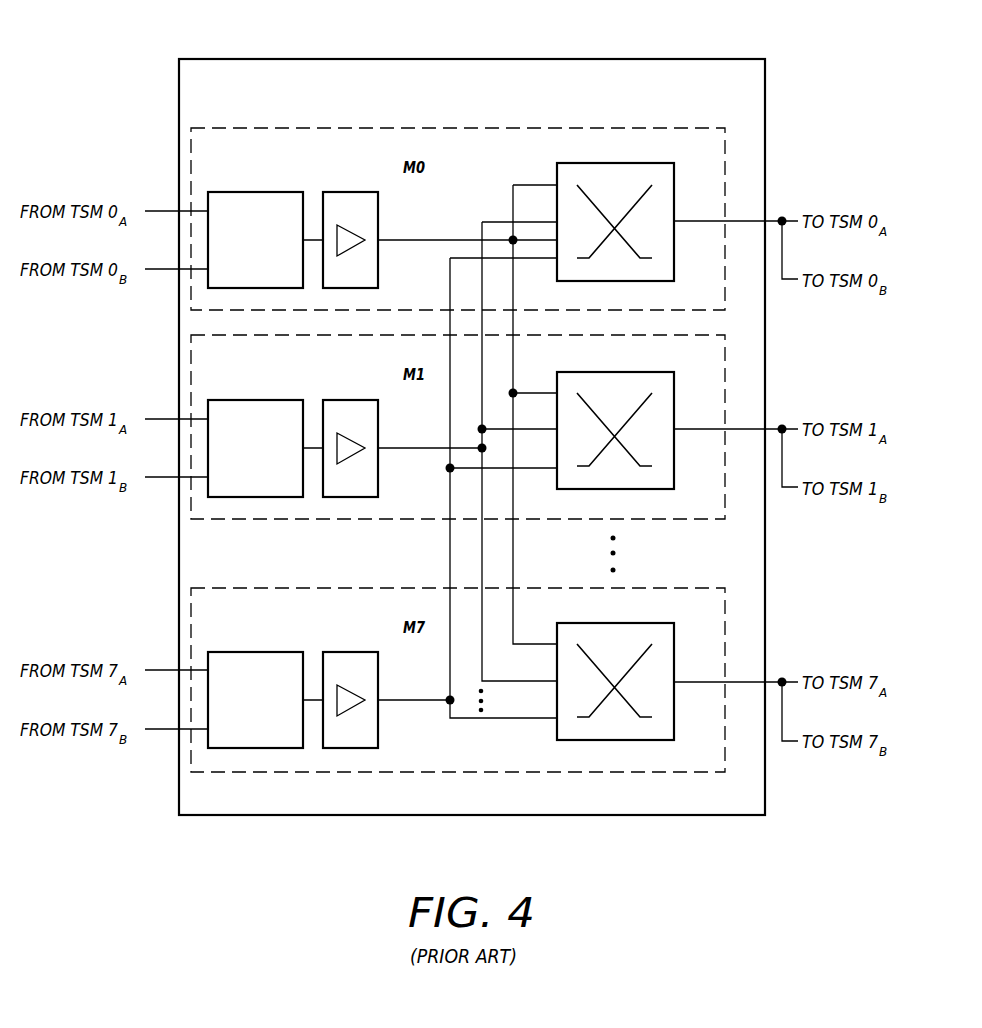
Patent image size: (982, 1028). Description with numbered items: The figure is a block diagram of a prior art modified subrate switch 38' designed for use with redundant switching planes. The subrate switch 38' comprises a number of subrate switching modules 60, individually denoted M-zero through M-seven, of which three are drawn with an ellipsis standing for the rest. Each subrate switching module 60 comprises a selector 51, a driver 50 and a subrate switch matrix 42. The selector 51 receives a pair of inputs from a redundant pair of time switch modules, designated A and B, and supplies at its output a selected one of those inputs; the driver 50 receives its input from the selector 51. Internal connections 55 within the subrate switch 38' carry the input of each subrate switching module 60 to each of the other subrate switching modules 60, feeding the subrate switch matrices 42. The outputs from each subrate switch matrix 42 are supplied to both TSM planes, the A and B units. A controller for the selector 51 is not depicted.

The modified subrate switch 38' is at (472, 415).
The subrate switching module 60 is at (723, 153).
The selector 51 is at (254, 192).
The driver 50 is at (350, 192).
The internal connection 55 is at (455, 256).
The subrate switch matrix 42 is at (675, 248).